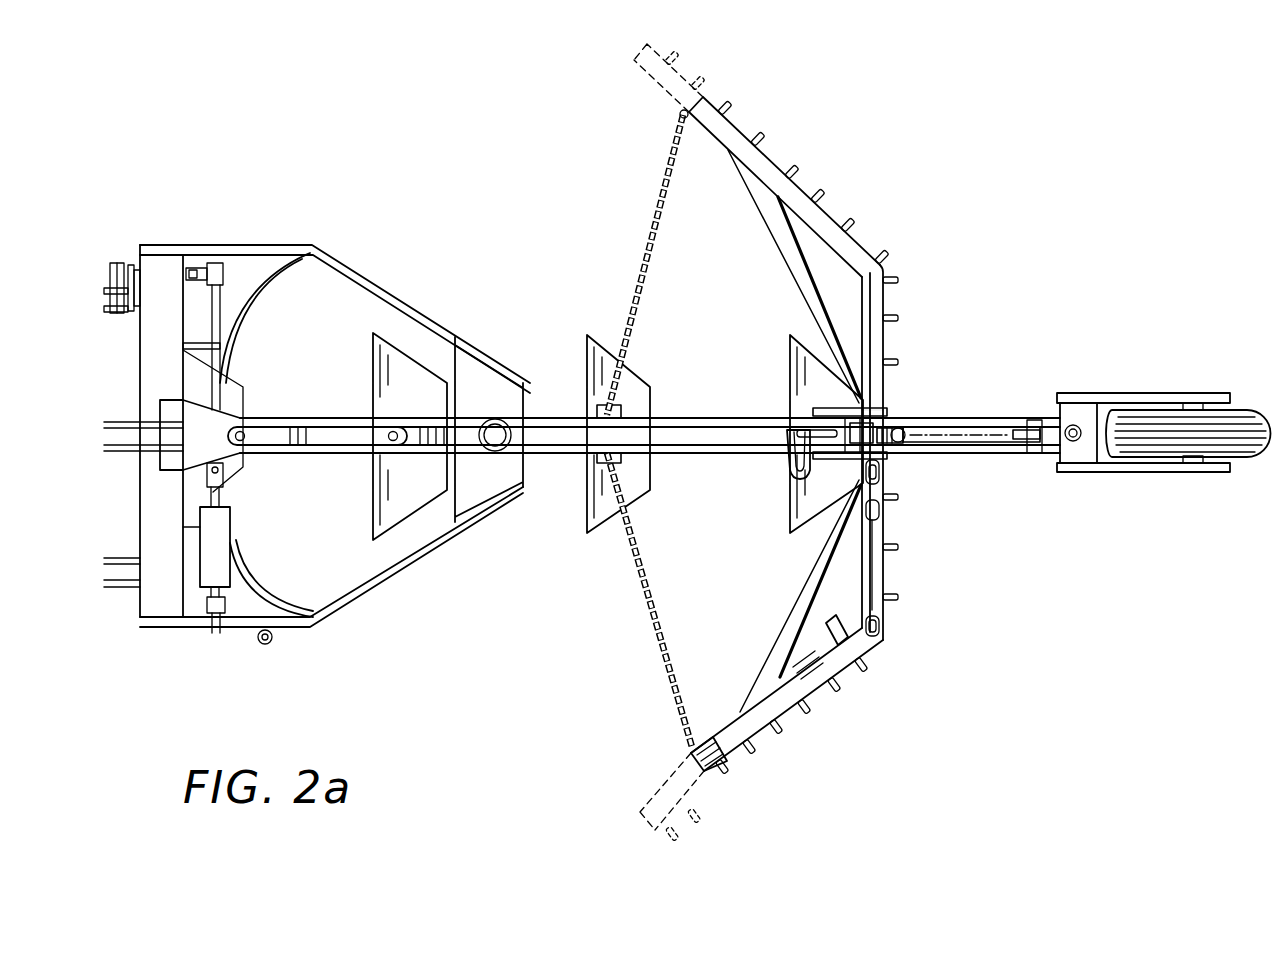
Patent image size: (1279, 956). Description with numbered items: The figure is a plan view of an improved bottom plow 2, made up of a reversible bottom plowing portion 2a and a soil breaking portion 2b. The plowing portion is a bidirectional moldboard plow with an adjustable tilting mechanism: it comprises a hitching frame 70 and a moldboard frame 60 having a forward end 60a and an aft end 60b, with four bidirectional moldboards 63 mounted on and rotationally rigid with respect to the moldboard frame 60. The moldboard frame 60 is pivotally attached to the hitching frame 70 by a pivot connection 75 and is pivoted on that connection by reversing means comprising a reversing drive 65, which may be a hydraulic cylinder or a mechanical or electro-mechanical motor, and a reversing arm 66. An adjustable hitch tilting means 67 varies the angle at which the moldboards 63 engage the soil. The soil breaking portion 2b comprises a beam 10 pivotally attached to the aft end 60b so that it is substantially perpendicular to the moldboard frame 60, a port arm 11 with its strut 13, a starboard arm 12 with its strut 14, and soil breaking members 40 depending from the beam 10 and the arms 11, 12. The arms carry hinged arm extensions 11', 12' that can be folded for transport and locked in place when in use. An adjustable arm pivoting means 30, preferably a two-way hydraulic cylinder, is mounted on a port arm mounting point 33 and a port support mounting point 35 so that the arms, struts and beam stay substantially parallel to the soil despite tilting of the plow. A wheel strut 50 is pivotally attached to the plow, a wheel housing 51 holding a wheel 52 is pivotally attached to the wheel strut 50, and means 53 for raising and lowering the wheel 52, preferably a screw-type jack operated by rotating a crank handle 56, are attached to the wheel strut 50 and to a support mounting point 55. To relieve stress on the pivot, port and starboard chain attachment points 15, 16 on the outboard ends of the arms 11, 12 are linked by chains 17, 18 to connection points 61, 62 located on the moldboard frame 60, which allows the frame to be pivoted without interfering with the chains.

The improved bottom plow 2 is at (517, 292).
The reversible bottom plowing portion 2a is at (367, 642).
The soil breaking portion 2b is at (985, 581).
The beam 10 is at (881, 302).
The port arm 11 is at (787, 693).
The hinged arm extension 11' is at (653, 797).
The starboard arm 12 is at (784, 179).
The hinged arm extension 12' is at (644, 78).
The strut 13 is at (783, 635).
The strut 14 is at (777, 245).
The port chain attachment point 15 is at (695, 745).
The starboard chain attachment point 16 is at (683, 118).
The chain 17 is at (648, 600).
The chain 18 is at (646, 262).
The adjustable arm pivoting means 30 is at (880, 560).
The port arm mounting point 33 is at (880, 632).
The port support mounting point 35 is at (880, 470).
The soil breaking members 40 is at (900, 278).
The wheel strut 50 is at (997, 453).
The wheel housing 51 is at (1145, 393).
The wheel 52 is at (1261, 458).
The means for raising and lowering wheel 53 is at (963, 428).
The support mounting point 55 is at (892, 423).
The crank handle 56 is at (795, 450).
The moldboard frame 60 is at (700, 453).
The forward end 60a is at (258, 396).
The aft end 60b is at (935, 370).
The connection point 61 is at (598, 460).
The connection point 62 is at (625, 408).
The bidirectional moldboards 63 is at (810, 505).
The reversing drive 65 is at (215, 545).
The reversing arm 66 is at (340, 432).
The adjustable hitch tilting means 67 is at (135, 261).
The hitching frame 70 is at (250, 245).
The pivot connection 75 is at (493, 432).